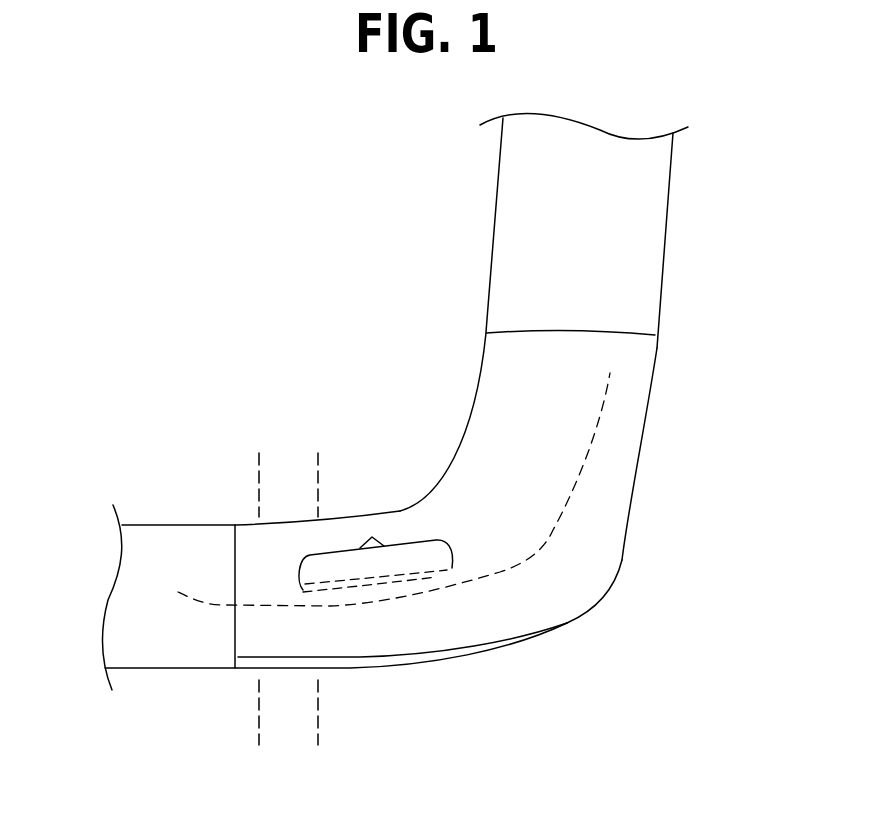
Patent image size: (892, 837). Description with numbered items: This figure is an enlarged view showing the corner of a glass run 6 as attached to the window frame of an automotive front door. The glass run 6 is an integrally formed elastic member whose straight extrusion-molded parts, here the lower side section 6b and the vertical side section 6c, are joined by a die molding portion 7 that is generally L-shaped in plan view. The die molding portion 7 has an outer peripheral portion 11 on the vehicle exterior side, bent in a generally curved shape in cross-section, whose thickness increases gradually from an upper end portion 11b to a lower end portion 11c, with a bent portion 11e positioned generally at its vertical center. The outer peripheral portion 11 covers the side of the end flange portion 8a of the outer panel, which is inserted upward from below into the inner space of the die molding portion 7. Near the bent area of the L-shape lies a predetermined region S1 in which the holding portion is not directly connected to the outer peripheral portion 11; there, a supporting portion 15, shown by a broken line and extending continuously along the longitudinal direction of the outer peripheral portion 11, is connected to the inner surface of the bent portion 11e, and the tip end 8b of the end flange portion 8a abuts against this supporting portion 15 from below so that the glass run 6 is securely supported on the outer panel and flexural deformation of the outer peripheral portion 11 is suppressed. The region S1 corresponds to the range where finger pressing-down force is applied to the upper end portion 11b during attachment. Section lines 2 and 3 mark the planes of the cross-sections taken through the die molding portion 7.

The glass run 6 is at (668, 307).
The lower side section 6b is at (147, 650).
The vertical side section 6c is at (650, 221).
The die molding portion 7 is at (650, 398).
The end flange portion of the outer panel 8a is at (456, 489).
The tip end of the end flange portion 8b is at (550, 540).
The outer peripheral portion 11 is at (430, 562).
The upper end portion of the outer peripheral portion 11b is at (418, 515).
The lower end portion of the outer peripheral portion 11c is at (335, 663).
The bent portion of the outer peripheral portion 11e is at (513, 553).
The supporting portion 15 is at (433, 578).
The predetermined region S1 is at (371, 537).
The section line FIG. 2 is at (313, 470).
The section line FIG. 3 is at (254, 470).